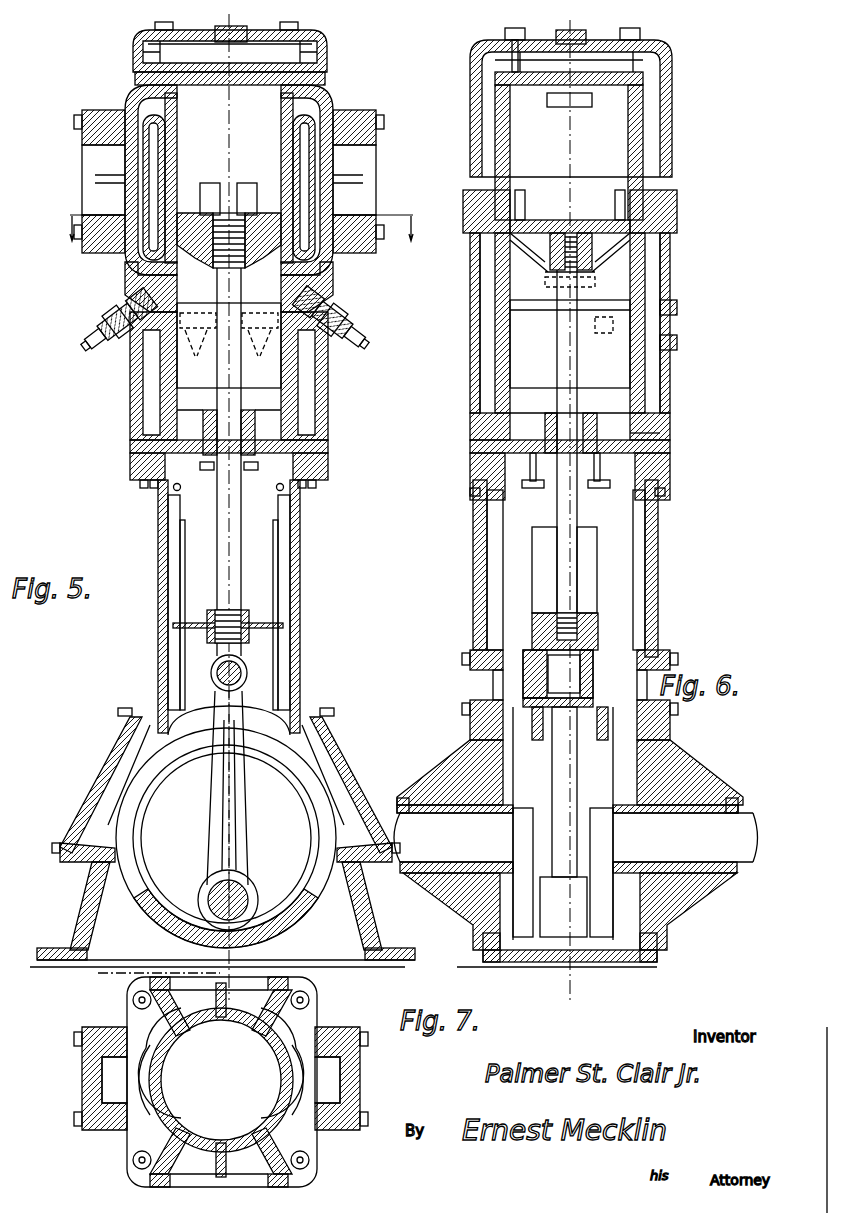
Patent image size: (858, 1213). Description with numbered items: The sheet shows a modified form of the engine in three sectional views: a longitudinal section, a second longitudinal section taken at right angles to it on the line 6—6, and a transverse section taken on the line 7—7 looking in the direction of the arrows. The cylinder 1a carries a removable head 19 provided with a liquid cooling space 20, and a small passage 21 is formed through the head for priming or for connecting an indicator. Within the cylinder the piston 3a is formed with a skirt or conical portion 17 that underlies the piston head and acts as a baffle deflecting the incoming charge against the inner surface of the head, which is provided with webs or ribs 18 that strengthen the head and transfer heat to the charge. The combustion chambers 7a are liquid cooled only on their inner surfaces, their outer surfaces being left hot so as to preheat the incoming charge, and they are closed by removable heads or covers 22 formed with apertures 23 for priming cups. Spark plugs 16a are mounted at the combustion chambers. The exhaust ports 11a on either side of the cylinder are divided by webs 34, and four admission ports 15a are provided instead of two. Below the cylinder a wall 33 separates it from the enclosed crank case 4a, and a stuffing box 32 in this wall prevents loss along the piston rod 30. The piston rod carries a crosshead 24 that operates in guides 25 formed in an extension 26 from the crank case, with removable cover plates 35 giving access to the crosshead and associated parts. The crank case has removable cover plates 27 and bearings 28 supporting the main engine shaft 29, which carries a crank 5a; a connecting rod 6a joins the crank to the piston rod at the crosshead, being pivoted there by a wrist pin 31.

In FIG. 5, the cylinder 1a is at (330, 72).
In FIG. 6, the cylinder 1a is at (672, 115).
In FIG. 5, the piston 3a is at (170, 388).
In FIG. 6, the piston 3a is at (510, 365).
In FIG. 5, the crank case 4a is at (300, 712).
In FIG. 6, the crank case 4a is at (665, 772).
In FIG. 5, the crank 5a is at (185, 850).
In FIG. 6, the crank 5a is at (608, 940).
In FIG. 5, the connecting rod 6a is at (232, 800).
In FIG. 6, the connecting rod 6a is at (560, 773).
In FIG. 5, the section line 6— 6 is at (229, 14).
In FIG. 5, the section line 7— 7 is at (226, 232).
In FIG. 5, the combustion chambers 7a is at (128, 210).
In FIG. 7, the combustion chambers 7a is at (118, 1080).
In FIG. 5, the exhaust ports 11a is at (248, 192).
In FIG. 5, the admission ports 15a is at (232, 344).
In FIG. 5, the spark plugs 16a is at (98, 323).
In FIG. 5, the skirt or conical portion 17 is at (180, 300).
In FIG. 6, the skirt or conical portion 17 is at (528, 290).
In FIG. 6, the webs or ribs 18 is at (600, 245).
In FIG. 5, the removable head 19 is at (138, 38).
In FIG. 6, the removable head 19 is at (668, 46).
In FIG. 5, the liquid cooling space 20 is at (322, 38).
In FIG. 6, the liquid cooling space 20 is at (569, 61).
In FIG. 6, the small passage 21 is at (533, 44).
In FIG. 5, the removable heads or covers 22 is at (376, 137).
In FIG. 7, the removable heads or covers 22 is at (82, 1052).
In FIG. 5, the apertures 23 is at (378, 217).
In FIG. 5, the crosshead 24 is at (300, 631).
In FIG. 5, the guides 25 is at (280, 570).
In FIG. 5, the extension 26 is at (300, 520).
In FIG. 5, the removable cover plates 27 is at (92, 758).
In FIG. 6, the bearings 28 is at (700, 805).
In FIG. 6, the main engine shaft 29 is at (576, 837).
In FIG. 5, the piston rod 30 is at (222, 528).
In FIG. 6, the piston rod 30 is at (570, 522).
In FIG. 5, the wrist pin 31 is at (214, 674).
In FIG. 6, the wrist pin 31 is at (538, 684).
In FIG. 5, the stuffing box 32 is at (248, 470).
In FIG. 6, the stuffing box 32 is at (548, 490).
In FIG. 5, the wall 33 is at (328, 450).
In FIG. 6, the wall 33 is at (670, 458).
In FIG. 7, the webs 34 is at (221, 1017).
In FIG. 6, the removable cover plates 35 is at (473, 554).